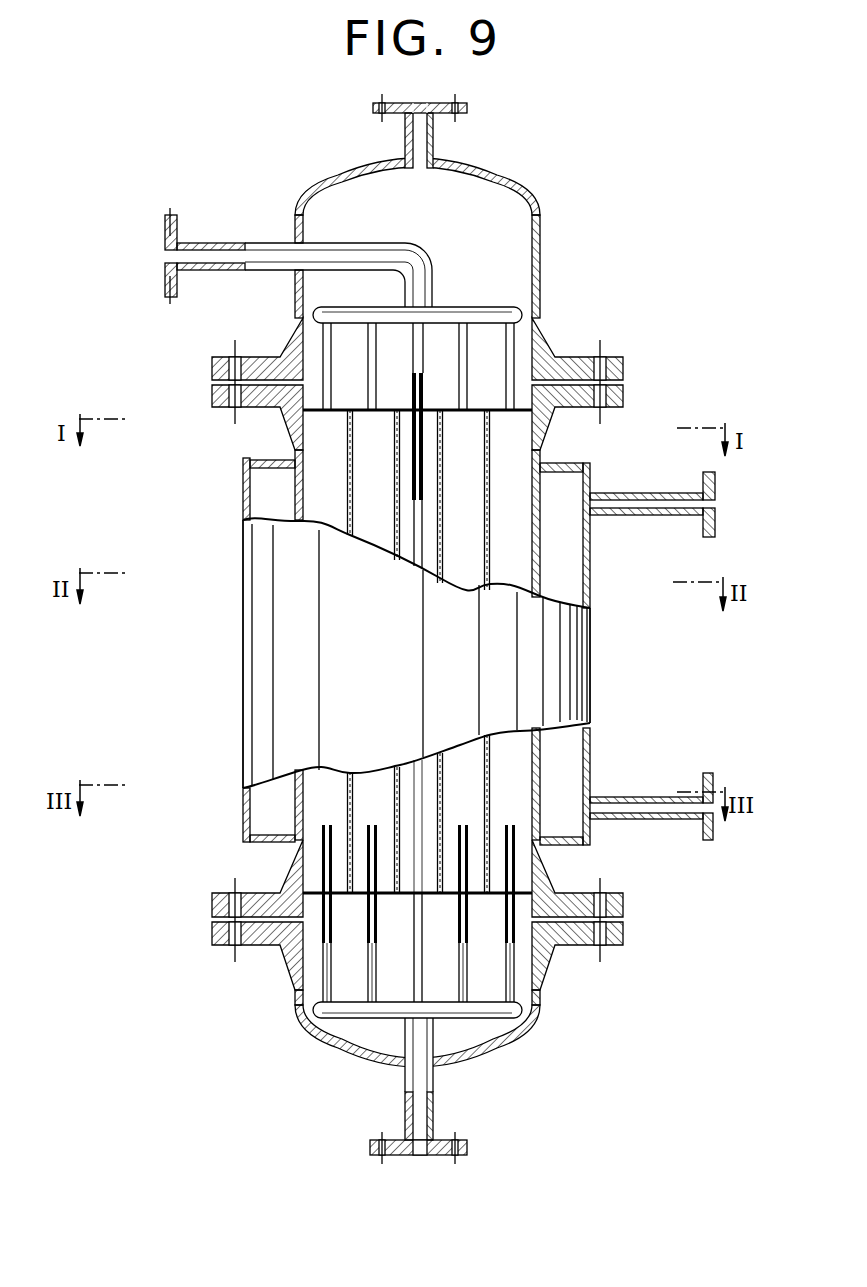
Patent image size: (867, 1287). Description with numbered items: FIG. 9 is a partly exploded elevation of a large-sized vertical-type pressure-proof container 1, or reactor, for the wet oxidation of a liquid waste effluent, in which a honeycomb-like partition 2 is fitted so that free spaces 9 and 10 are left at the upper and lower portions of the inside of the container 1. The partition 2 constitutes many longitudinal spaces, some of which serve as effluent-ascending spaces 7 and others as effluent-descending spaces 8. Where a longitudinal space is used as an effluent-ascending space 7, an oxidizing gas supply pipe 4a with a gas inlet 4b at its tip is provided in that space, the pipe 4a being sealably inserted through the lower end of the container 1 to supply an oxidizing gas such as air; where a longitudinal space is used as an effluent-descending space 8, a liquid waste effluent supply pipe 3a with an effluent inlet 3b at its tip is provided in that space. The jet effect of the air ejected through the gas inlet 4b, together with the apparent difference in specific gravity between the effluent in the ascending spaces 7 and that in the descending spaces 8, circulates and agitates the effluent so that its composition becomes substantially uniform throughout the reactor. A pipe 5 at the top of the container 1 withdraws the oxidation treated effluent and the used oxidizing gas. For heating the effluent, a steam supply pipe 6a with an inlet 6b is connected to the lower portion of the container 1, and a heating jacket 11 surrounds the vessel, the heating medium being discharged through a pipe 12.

The vertical-type pressure-proof container 1 is at (300, 482).
The partition 2 is at (490, 772).
The liquid waste effluent supply pipe 3a is at (372, 347).
The effluent inlet 3b is at (420, 502).
The oxidizing gas supply pipe 4a is at (417, 980).
The gas inlet 4b is at (333, 812).
The withdrawal pipe 5 is at (420, 148).
The steam supply pipe 6a is at (686, 495).
The steam inlet 6b is at (646, 487).
The effluent-ascending space 7 is at (472, 480).
The effluent-descending space 8 is at (413, 525).
The upper free space 9 is at (483, 228).
The lower free space 10 is at (445, 968).
The heating jacket 11 is at (565, 585).
The heating medium discharge pipe 12 is at (663, 808).